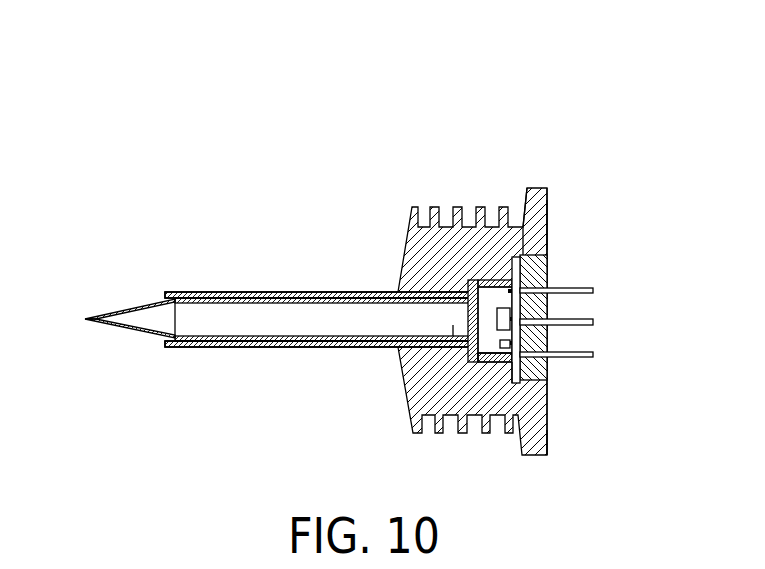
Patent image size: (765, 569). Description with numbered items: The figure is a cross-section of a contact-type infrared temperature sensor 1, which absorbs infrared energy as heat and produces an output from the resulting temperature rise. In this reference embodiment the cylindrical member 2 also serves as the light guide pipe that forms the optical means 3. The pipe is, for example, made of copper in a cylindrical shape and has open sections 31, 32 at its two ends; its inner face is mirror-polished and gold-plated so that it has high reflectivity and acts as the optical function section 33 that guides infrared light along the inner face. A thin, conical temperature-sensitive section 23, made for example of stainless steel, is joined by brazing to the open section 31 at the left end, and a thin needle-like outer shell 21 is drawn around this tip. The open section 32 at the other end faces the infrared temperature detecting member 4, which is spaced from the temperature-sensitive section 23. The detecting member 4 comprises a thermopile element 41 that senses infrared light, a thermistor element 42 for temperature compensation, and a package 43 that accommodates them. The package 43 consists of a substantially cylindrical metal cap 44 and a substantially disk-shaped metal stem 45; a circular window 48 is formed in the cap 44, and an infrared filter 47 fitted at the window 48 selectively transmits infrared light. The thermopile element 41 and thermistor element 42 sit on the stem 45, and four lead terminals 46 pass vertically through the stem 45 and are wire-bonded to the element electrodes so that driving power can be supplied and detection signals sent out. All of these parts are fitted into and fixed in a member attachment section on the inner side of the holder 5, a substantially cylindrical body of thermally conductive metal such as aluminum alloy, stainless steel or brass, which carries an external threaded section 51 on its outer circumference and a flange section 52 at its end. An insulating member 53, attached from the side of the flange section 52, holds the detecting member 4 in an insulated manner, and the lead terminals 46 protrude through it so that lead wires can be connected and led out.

The contact-type infrared temperature sensor 1 is at (235, 142).
The cylindrical member 2 is at (243, 293).
The optical means 3 is at (317, 319).
The infrared temperature detecting member 4 is at (512, 257).
The holder 5 is at (545, 228).
The puncture needle 21 is at (137, 332).
The temperature-sensitive section 23 is at (137, 307).
The open section 31 is at (181, 318).
The open section 32 is at (453, 328).
The optical function section 33 is at (287, 293).
The thermopile element 41 is at (497, 310).
The thermistor element 42 is at (500, 342).
The package 43 is at (493, 298).
The cap 44 is at (472, 283).
The stem 45 is at (547, 384).
The lead terminals 46 is at (572, 288).
The infrared filter 47 is at (548, 193).
The window 48 is at (478, 356).
The external threaded section 51 is at (448, 222).
The flange section 52 is at (547, 443).
The insulating member 53 is at (512, 373).